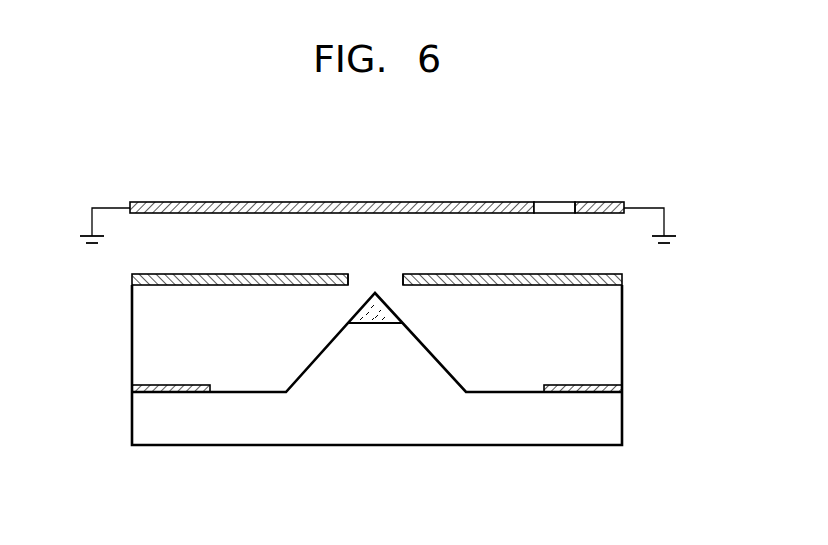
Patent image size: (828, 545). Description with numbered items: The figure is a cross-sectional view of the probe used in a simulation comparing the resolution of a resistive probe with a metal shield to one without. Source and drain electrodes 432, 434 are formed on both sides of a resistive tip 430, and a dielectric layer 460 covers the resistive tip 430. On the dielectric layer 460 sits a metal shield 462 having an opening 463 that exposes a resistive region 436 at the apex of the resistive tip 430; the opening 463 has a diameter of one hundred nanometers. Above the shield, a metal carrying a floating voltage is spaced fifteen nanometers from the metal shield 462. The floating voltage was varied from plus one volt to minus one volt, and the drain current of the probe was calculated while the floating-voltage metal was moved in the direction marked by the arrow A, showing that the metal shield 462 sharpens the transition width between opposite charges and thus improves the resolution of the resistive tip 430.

The resistive tip 430 is at (308, 334).
The source electrode 432 is at (132, 388).
The drain electrode 434 is at (622, 390).
The resistive region 436 is at (375, 325).
The dielectric layer 460 is at (610, 333).
The metal shield 462 is at (130, 280).
The opening 463 is at (399, 275).
The arrow A is at (413, 188).